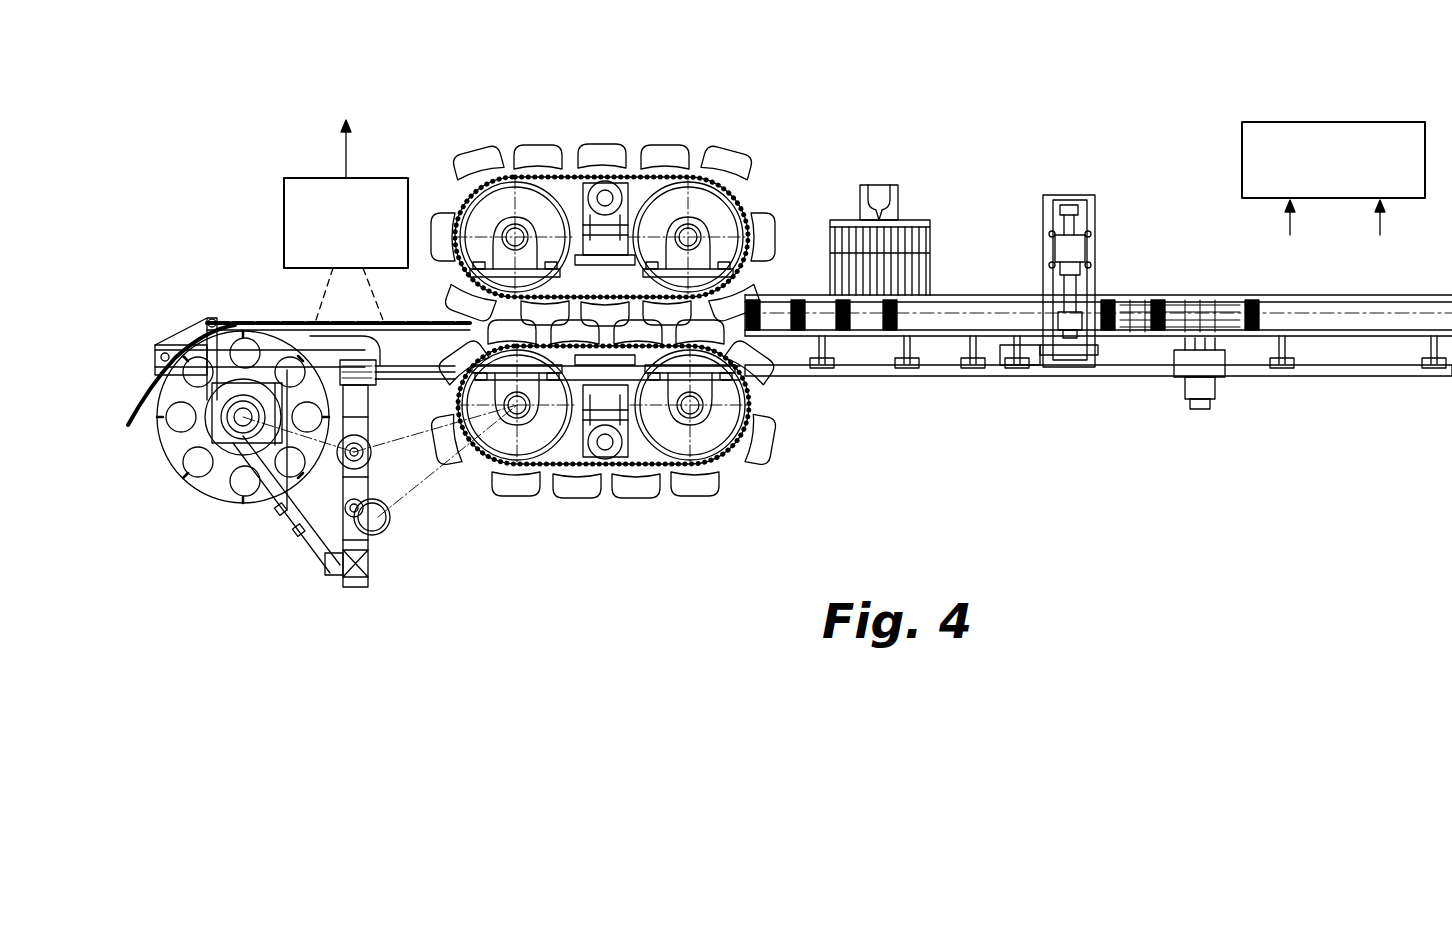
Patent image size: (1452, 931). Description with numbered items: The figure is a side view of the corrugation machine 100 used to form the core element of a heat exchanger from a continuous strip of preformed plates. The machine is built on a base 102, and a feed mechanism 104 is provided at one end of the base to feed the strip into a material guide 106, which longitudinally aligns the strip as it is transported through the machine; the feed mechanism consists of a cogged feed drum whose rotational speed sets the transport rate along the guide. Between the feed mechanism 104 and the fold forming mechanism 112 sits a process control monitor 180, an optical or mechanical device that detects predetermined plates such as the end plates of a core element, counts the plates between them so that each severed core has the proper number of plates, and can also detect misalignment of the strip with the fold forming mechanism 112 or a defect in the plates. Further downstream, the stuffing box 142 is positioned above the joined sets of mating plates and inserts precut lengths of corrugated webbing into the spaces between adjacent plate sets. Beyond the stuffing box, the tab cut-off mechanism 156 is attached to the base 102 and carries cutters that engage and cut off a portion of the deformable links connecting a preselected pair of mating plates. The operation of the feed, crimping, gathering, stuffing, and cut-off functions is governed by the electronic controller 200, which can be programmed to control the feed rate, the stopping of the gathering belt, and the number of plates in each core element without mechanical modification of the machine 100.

The corrugation machine 100 is at (1155, 112).
The base 102 is at (1329, 373).
The feed mechanism 104 is at (212, 497).
The material guide 106 is at (596, 391).
The fold forming mechanism 112 is at (697, 156).
The stuffing box 142 is at (930, 256).
The tab cut-off mechanism 156 is at (1097, 198).
The process control monitor 180 is at (284, 206).
The electronic controller 200 is at (1351, 120).